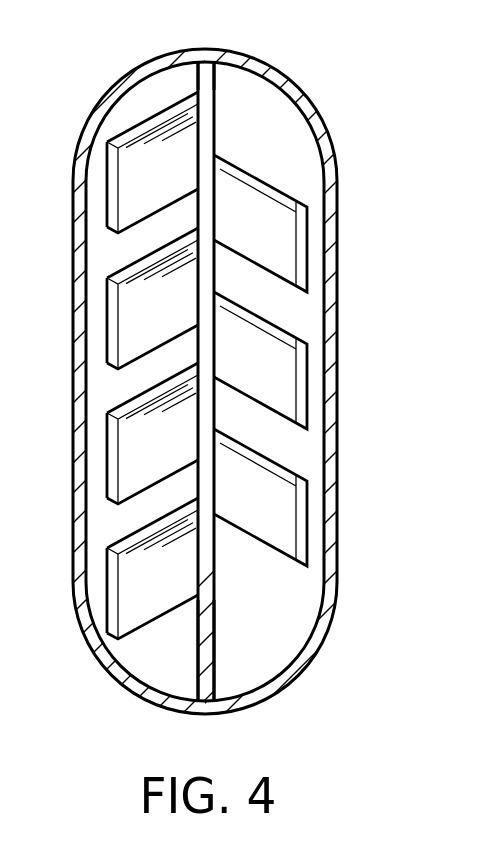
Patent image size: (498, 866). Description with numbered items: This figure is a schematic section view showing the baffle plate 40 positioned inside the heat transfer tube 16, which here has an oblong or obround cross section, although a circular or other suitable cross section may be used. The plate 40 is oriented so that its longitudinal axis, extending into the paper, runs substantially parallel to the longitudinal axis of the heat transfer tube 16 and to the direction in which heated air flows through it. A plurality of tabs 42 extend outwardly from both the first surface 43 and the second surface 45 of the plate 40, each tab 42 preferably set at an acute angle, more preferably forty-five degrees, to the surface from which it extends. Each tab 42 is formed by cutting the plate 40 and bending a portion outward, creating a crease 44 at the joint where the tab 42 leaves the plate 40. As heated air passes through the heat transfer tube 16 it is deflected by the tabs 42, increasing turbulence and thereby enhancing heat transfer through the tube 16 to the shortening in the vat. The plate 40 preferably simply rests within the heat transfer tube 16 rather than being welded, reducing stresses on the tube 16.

The heat transfer tube 16 is at (336, 165).
The baffle plate 40 is at (219, 68).
The tabs 42 is at (260, 197).
The first surface 43 is at (198, 648).
The crease 44 is at (214, 126).
The second surface 45 is at (214, 633).